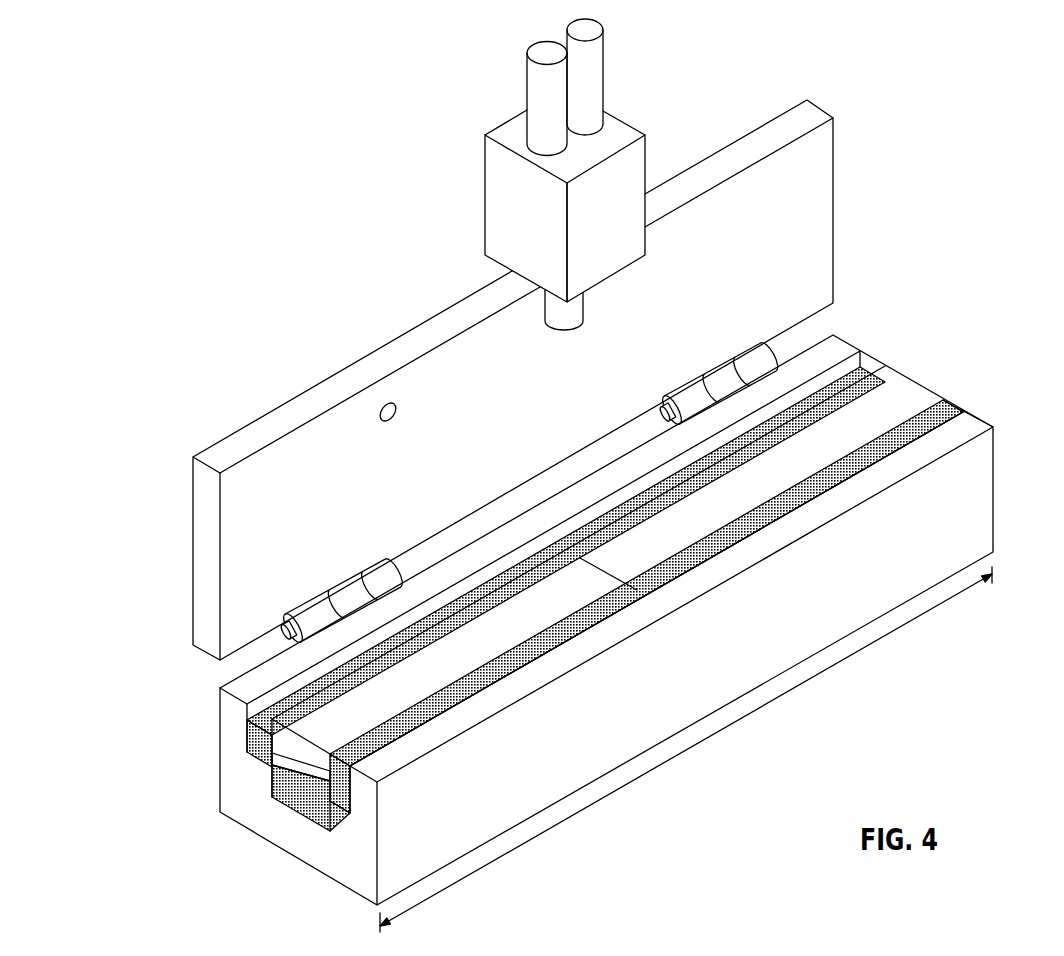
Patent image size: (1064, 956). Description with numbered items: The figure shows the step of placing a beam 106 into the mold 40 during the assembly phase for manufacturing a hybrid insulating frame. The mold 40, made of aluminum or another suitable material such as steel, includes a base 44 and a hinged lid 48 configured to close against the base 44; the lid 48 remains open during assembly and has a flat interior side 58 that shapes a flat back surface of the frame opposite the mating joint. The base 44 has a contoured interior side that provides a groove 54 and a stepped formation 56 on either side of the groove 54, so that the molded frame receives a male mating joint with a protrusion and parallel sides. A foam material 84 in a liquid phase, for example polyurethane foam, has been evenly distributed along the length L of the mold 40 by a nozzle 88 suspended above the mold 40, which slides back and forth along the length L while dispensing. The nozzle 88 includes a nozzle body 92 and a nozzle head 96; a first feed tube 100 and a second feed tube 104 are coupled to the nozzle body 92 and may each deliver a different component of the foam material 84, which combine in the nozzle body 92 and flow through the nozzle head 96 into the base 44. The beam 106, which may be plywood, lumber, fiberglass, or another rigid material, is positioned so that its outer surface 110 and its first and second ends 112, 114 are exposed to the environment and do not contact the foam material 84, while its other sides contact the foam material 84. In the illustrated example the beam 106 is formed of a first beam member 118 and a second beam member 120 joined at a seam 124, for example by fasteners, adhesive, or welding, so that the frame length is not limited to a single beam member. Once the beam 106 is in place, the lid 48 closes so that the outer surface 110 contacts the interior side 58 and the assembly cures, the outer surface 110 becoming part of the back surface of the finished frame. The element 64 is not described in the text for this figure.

The mold 40 is at (979, 228).
The base 44 is at (980, 493).
The lid 48 is at (543, 380).
The groove 54 is at (297, 813).
The stepped formation 56 is at (243, 750).
The flat interior side 58 is at (291, 514).
The aperture 64 is at (385, 402).
The foam material 84 is at (313, 695).
The nozzle 88 is at (554, 186).
The nozzle body 92 is at (495, 202).
The nozzle head 96 is at (567, 315).
The first feed tube 100 is at (533, 82).
The second feed tube 104 is at (596, 67).
The beam 106 is at (890, 403).
The outer surface 110 is at (826, 471).
The first end 112 is at (276, 750).
The second end 114 is at (925, 402).
The first beam member 118 is at (465, 688).
The second beam member 120 is at (727, 532).
The seam 124 is at (597, 558).
The length L is at (717, 730).